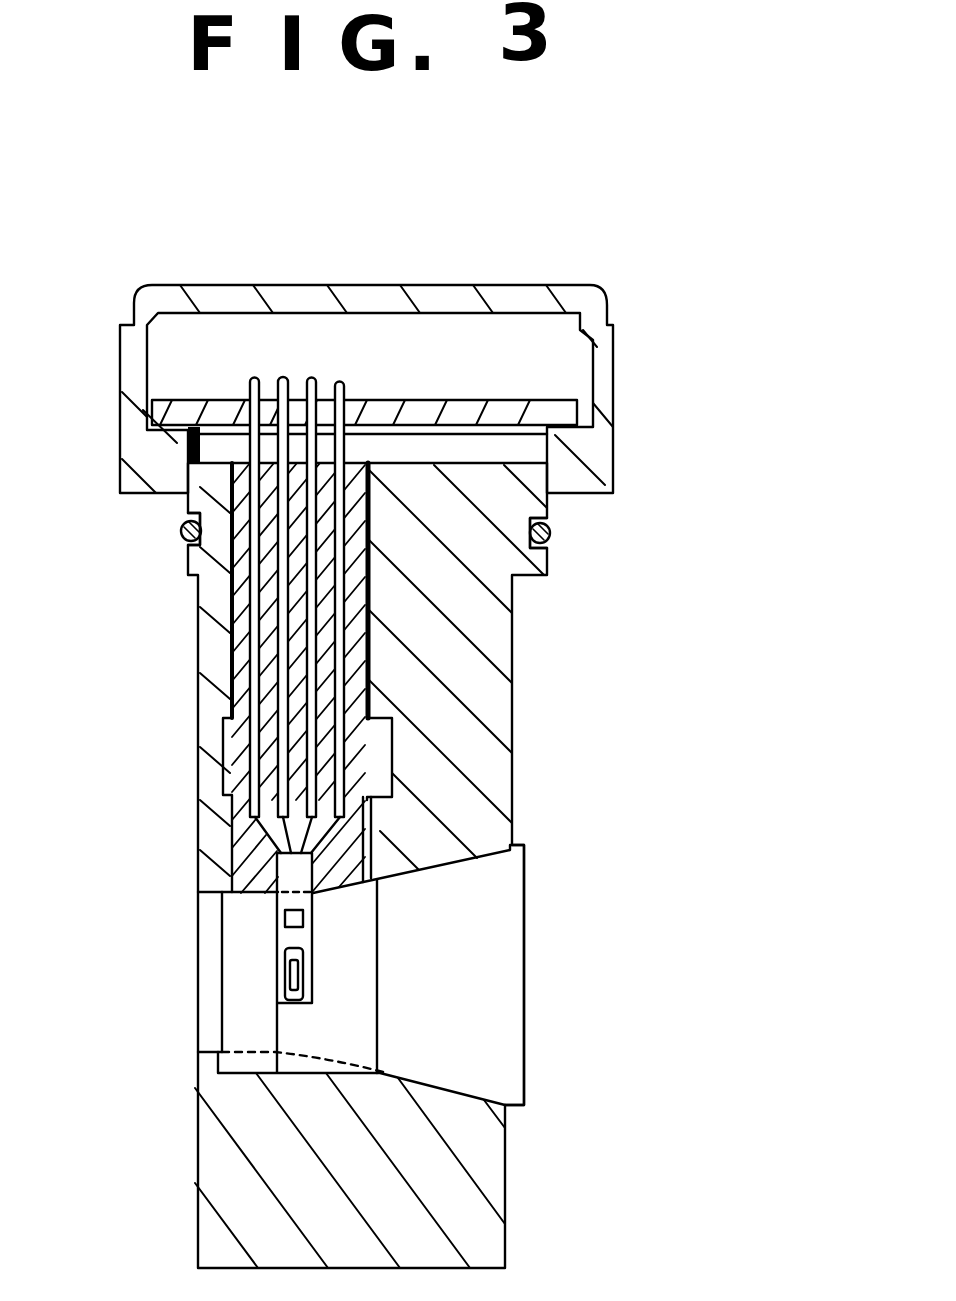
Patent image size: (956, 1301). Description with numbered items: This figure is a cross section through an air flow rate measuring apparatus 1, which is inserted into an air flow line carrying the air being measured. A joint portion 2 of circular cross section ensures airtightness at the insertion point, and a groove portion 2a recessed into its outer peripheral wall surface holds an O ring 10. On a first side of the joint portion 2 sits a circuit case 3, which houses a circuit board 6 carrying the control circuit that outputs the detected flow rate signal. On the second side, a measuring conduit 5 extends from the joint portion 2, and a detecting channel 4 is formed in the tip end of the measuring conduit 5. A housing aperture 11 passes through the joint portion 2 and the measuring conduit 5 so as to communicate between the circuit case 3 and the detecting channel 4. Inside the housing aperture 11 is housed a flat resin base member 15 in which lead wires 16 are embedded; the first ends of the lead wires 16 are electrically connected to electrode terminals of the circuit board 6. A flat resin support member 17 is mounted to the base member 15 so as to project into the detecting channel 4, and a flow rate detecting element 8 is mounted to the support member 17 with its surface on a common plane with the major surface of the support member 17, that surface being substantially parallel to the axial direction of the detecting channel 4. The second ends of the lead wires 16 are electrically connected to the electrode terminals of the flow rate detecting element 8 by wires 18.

The air flow rate measuring apparatus 1 is at (76, 212).
The joint portion 2 is at (566, 504).
The groove portion 2a is at (190, 546).
The circuit case 3 is at (613, 405).
The detecting channel 4 is at (505, 961).
The measuring conduit 5 is at (511, 657).
The circuit board 6 is at (528, 403).
The flow rate detecting element 8 is at (282, 940).
The O ring 10 is at (181, 529).
The housing aperture 11 is at (413, 590).
The base member 15 is at (382, 748).
The lead wires 16 is at (247, 745).
The support member 17 is at (238, 997).
The wires 18 is at (229, 843).